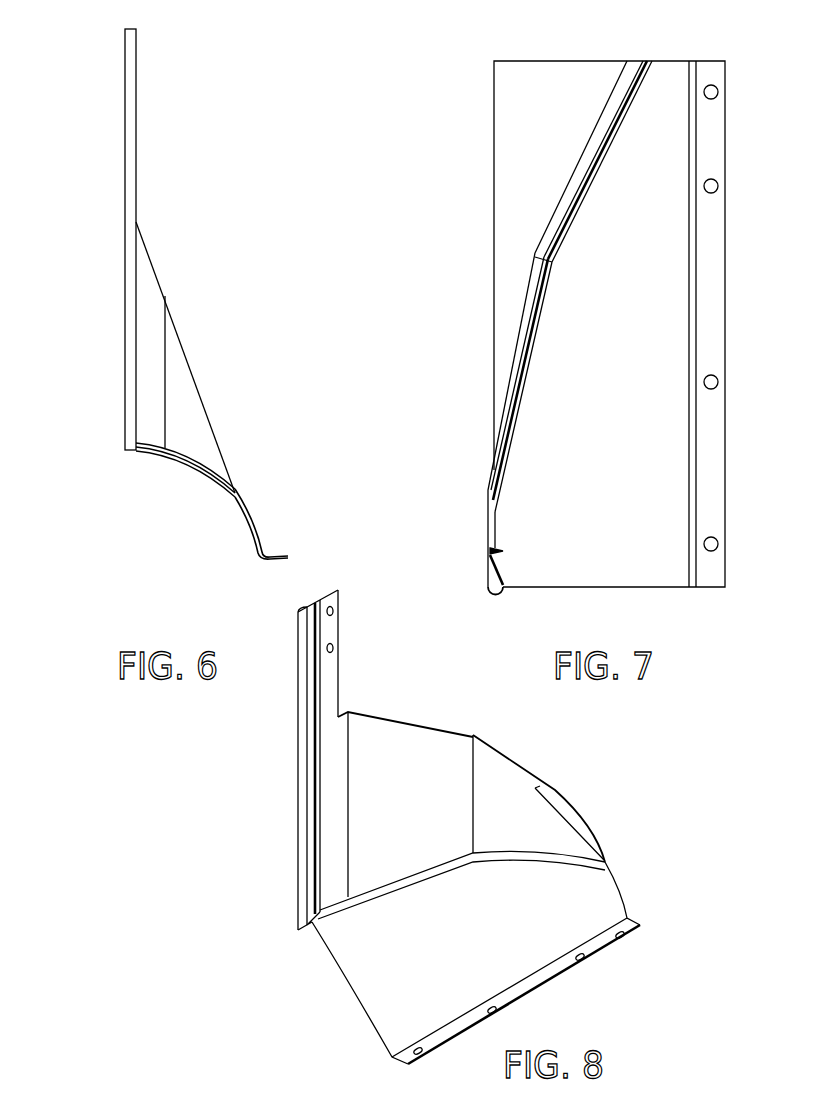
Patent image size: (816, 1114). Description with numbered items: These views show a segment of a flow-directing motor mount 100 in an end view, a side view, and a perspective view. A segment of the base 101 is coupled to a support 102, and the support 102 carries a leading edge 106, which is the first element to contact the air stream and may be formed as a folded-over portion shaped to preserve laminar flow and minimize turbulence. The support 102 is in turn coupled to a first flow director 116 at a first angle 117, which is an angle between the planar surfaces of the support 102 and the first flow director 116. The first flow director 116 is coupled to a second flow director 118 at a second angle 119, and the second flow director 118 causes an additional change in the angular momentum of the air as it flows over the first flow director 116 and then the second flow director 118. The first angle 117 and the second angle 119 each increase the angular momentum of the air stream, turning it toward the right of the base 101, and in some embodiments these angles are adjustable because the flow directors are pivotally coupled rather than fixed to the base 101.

In FIG. 6, the flow-directing motor mount 100 is at (36, 41).
In FIG. 7, the flow-directing motor mount 100 is at (446, 86).
In FIG. 8, the flow-directing motor mount 100 is at (674, 838).
In FIG. 6, the base 101 is at (216, 484).
In FIG. 7, the base 101 is at (638, 436).
In FIG. 8, the base 101 is at (503, 954).
In FIG. 6, the support 102 is at (130, 214).
In FIG. 7, the support 102 is at (492, 536).
In FIG. 8, the support 102 is at (332, 658).
In FIG. 7, the leading edge 106 is at (497, 599).
In FIG. 8, the leading edge 106 is at (300, 757).
In FIG. 6, the first flow director 116 is at (152, 283).
In FIG. 7, the first flow director 116 is at (531, 328).
In FIG. 8, the first flow director 116 is at (427, 817).
In FIG. 7, the first angle 117 is at (498, 506).
In FIG. 8, the first angle 117 is at (357, 902).
In FIG. 6, the second flow director 118 is at (176, 386).
In FIG. 7, the second flow director 118 is at (611, 137).
In FIG. 8, the second flow director 118 is at (527, 827).
In FIG. 7, the second angle 119 is at (560, 258).
In FIG. 8, the second angle 119 is at (487, 864).